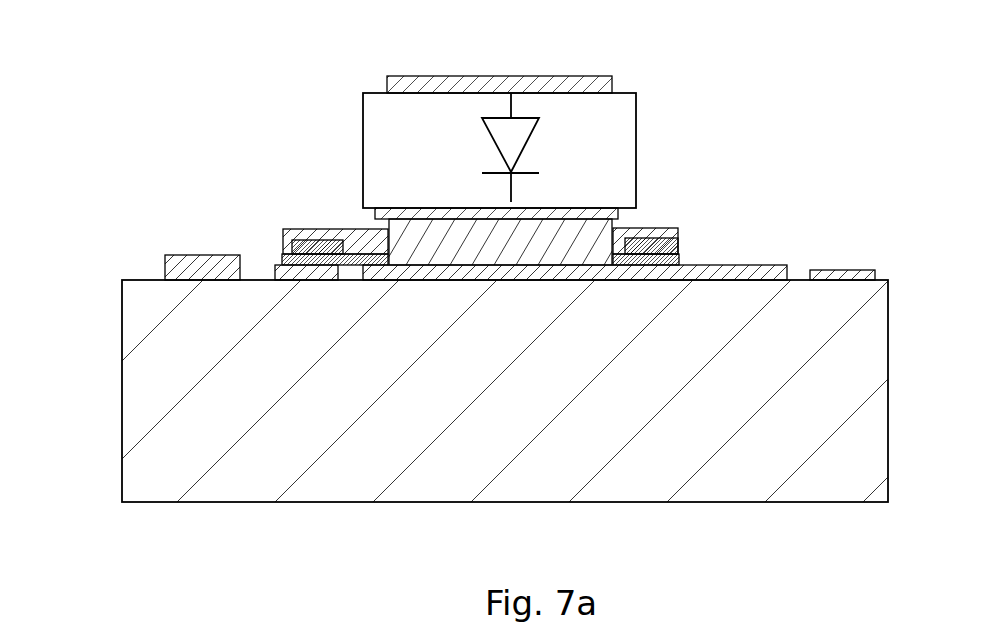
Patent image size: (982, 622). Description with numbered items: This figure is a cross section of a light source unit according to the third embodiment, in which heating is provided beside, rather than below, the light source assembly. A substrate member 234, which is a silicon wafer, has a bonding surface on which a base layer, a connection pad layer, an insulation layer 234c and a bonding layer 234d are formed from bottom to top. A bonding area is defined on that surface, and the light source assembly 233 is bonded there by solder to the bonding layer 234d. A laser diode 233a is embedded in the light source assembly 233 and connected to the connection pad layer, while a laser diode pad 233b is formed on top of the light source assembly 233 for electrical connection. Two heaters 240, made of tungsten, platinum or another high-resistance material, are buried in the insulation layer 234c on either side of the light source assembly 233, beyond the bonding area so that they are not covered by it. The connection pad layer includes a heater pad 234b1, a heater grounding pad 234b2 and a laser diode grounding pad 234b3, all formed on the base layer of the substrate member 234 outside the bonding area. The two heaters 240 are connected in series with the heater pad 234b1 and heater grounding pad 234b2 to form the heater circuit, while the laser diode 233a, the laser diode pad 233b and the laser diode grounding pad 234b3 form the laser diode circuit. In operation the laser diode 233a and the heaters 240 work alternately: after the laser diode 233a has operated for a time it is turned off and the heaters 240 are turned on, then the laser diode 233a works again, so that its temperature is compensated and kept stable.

The light source assembly 233 is at (386, 136).
The laser diode 233a is at (516, 134).
The laser diode pad 233b is at (532, 82).
The substrate member 234 is at (147, 389).
The heater pad 234b1 is at (292, 273).
The heater grounding pad 234b2 is at (188, 268).
The laser diode grounding pad 234b3 is at (860, 273).
The insulation layer 234c is at (323, 237).
The bonding layer 234d is at (570, 218).
The heater 240 is at (302, 249).